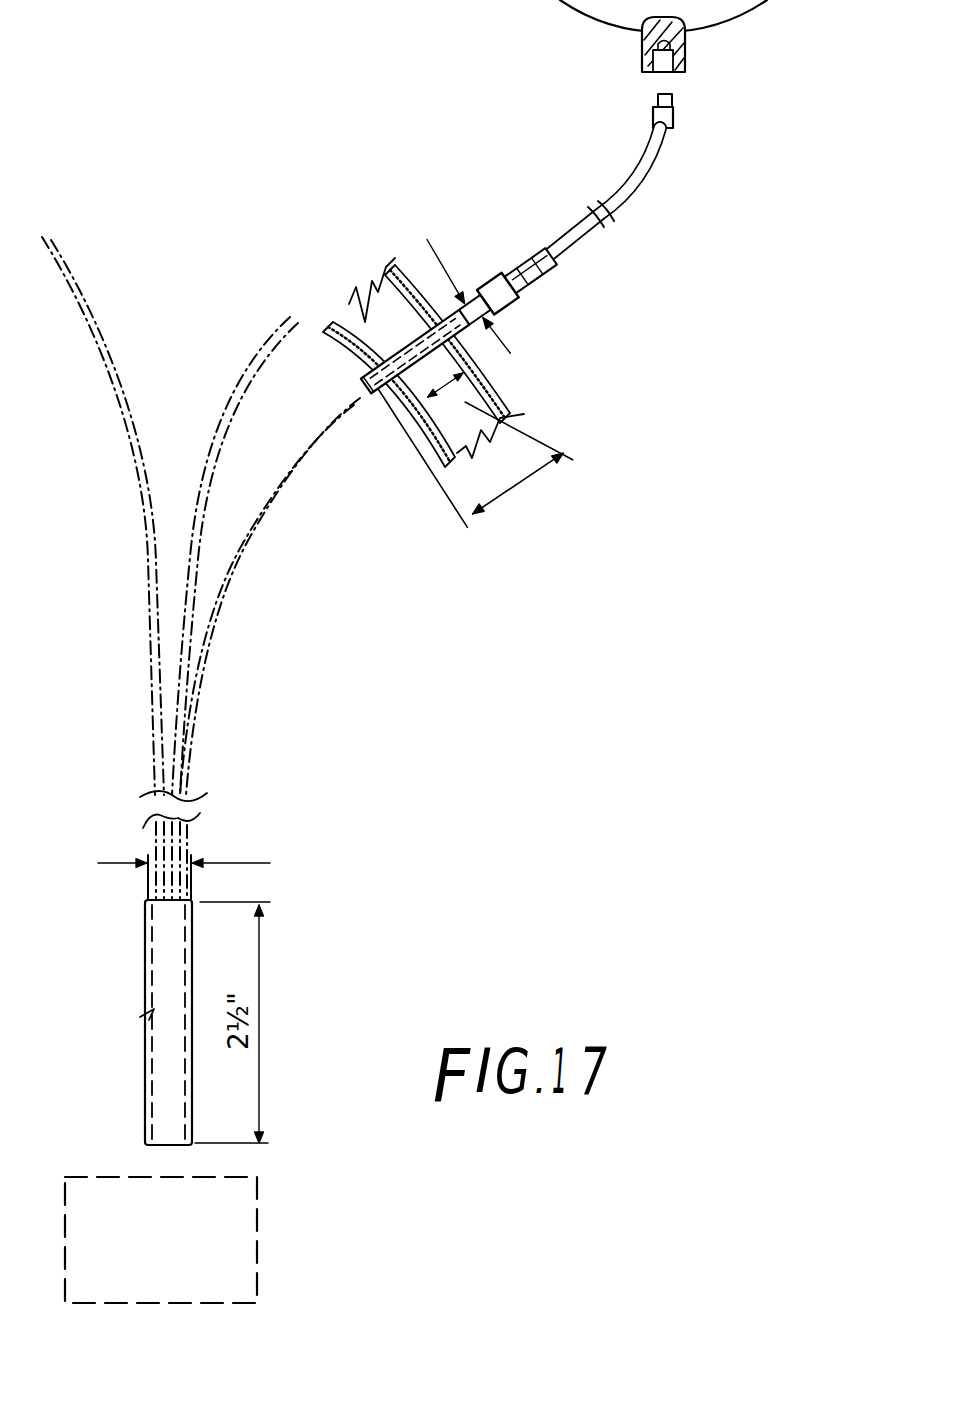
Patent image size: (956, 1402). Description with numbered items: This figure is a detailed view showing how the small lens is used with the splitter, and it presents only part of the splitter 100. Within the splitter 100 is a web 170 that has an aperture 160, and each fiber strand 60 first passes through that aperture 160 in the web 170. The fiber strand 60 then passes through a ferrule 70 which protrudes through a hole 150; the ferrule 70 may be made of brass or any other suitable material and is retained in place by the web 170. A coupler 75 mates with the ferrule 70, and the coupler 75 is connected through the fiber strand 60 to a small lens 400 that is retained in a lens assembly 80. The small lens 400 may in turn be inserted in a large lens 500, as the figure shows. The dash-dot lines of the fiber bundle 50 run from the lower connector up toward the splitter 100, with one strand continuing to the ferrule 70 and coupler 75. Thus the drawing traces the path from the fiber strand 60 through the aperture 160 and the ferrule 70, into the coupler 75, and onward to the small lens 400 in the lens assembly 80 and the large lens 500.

The fluid tubes 50 is at (216, 607).
The fiber strand 60 is at (627, 200).
The ferrule 70 is at (420, 363).
The coupler 75 is at (507, 298).
The lens assembly 80 is at (672, 115).
The splitter 100 is at (465, 401).
The hole 150 is at (441, 320).
The aperture 160 is at (353, 378).
The web 170 is at (440, 470).
The small lens 400 is at (668, 97).
The large lens 500 is at (687, 37).